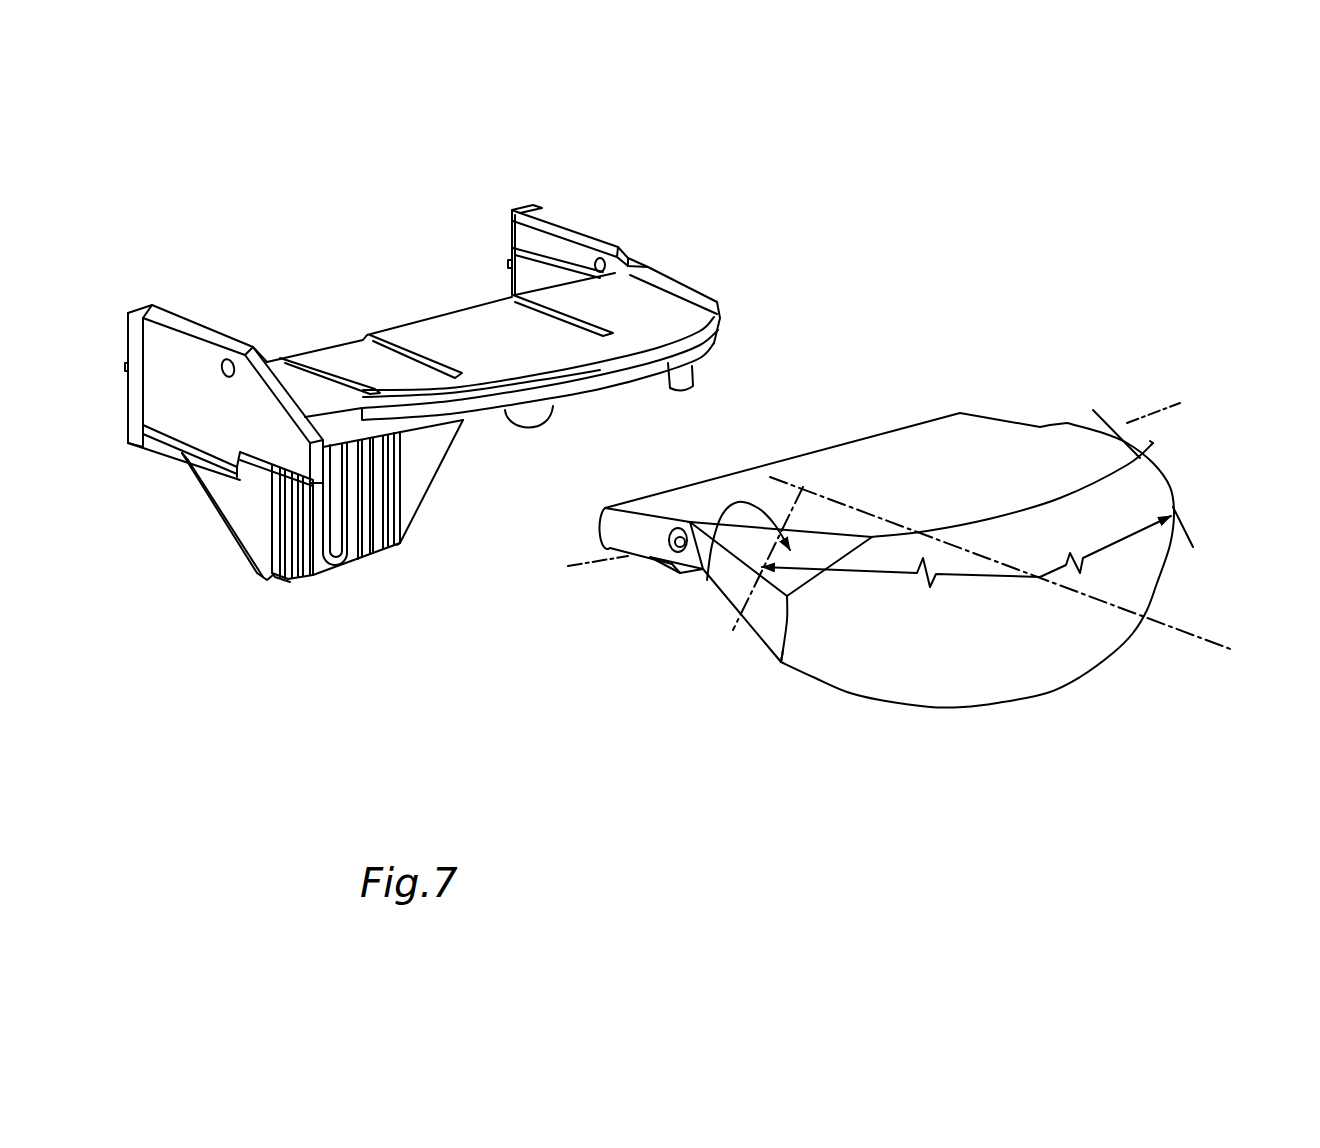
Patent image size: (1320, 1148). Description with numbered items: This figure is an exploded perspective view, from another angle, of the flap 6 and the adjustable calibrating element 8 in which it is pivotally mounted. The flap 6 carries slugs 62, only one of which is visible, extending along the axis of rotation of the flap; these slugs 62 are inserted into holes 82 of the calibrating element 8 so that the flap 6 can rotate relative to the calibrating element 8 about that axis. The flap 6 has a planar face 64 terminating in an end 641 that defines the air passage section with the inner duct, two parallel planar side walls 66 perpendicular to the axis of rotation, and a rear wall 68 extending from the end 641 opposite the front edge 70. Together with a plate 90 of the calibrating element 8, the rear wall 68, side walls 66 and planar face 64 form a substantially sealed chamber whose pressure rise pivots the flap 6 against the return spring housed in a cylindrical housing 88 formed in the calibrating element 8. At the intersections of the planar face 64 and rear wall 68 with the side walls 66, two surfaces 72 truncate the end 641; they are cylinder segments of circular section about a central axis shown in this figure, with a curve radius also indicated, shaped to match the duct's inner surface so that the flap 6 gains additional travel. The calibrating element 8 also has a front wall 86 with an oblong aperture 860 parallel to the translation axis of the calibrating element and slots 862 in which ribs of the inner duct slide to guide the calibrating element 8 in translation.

The adjustable calibrating element 8 is at (633, 200).
The holes 82 is at (225, 359).
The front wall 86 is at (233, 490).
The oblong aperture 860 is at (334, 494).
The slots 862 is at (400, 545).
The cylindrical housing 88 is at (558, 426).
The plate 90 is at (667, 313).
The flap 6 is at (1138, 406).
The slugs 62 is at (650, 557).
The planar face 64 is at (927, 457).
The end 641 is at (1057, 503).
The planar side walls 66 is at (777, 604).
The rear wall 68 is at (1048, 633).
The front edge 70 is at (598, 516).
The surfaces 72 is at (690, 524).